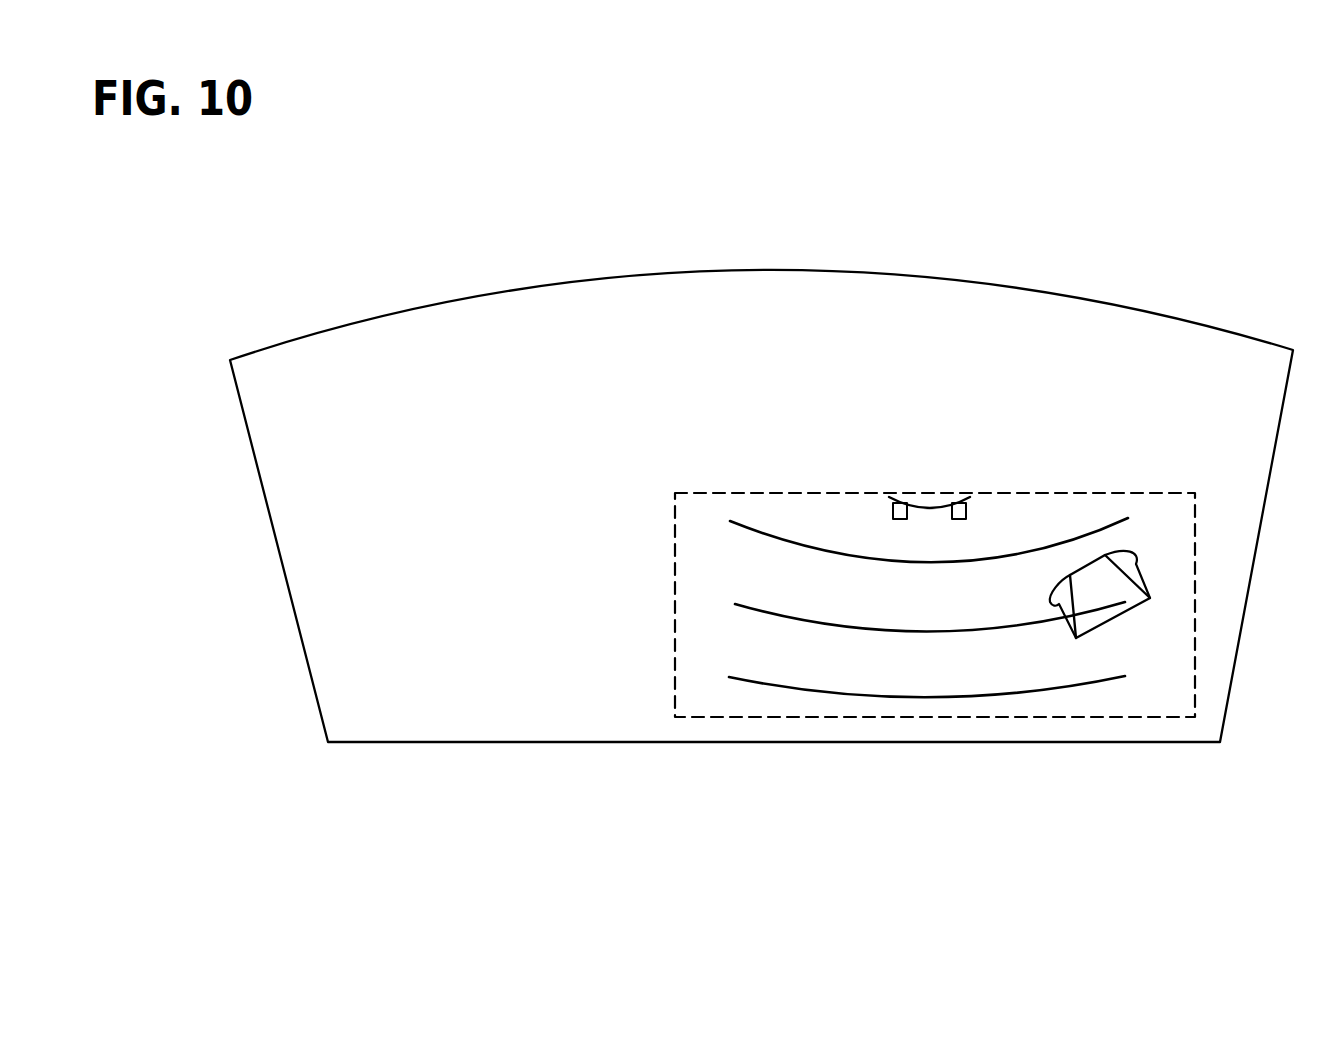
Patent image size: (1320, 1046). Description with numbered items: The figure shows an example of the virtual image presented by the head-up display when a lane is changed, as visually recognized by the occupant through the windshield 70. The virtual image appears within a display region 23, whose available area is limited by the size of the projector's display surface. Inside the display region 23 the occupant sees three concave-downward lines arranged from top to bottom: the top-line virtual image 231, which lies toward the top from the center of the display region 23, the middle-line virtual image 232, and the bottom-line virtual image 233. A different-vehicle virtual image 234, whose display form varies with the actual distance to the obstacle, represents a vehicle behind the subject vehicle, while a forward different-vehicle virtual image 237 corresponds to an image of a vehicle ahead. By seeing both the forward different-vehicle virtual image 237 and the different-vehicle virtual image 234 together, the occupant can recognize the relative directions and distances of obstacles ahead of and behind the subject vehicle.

The windshield 70 is at (382, 324).
The display region 23 is at (915, 717).
The top-line virtual image 231 is at (1073, 543).
The middle-line virtual image 232 is at (775, 620).
The bottom-line virtual image 233 is at (760, 685).
The different-vehicle virtual image 234 is at (1137, 605).
The forward different-vehicle virtual image 237 is at (930, 496).